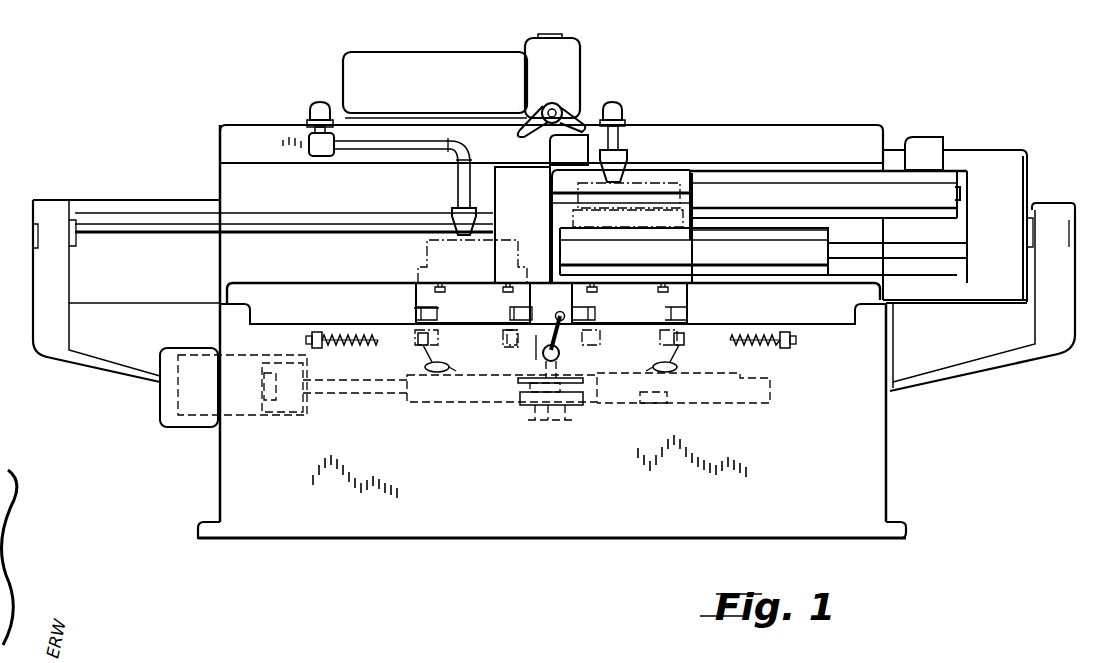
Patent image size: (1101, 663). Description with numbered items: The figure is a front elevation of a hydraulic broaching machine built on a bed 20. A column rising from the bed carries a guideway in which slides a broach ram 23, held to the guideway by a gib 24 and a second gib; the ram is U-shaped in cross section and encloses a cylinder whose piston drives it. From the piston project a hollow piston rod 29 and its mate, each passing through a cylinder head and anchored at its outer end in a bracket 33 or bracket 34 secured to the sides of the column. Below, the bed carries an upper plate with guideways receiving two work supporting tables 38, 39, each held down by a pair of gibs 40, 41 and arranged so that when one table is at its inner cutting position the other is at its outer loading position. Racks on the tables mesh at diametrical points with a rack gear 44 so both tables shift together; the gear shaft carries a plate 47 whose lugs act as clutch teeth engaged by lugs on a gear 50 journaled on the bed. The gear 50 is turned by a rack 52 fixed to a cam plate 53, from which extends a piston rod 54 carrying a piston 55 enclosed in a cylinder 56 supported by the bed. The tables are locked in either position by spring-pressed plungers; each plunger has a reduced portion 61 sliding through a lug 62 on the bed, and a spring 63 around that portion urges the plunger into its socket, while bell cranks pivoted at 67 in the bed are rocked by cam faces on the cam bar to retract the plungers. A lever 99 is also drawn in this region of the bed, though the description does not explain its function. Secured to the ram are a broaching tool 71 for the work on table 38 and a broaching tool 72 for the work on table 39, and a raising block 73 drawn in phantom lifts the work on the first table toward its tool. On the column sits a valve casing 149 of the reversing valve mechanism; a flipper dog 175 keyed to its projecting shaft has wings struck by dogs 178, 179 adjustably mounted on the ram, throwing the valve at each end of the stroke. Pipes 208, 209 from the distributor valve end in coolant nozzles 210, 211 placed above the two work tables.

The bed 20 is at (880, 458).
The broach ram 23 is at (957, 268).
The gib 24 is at (272, 133).
The hollow piston rod 29 is at (153, 217).
The arm or bracket 33 is at (62, 272).
The arm or bracket 34 is at (997, 360).
The work supporting table 38 is at (680, 300).
The work supporting table 39 is at (412, 281).
The gib 40 is at (588, 313).
The gib 41 is at (414, 314).
The rack gear 44 is at (535, 340).
The plate 47 is at (518, 378).
The gear 50 is at (517, 403).
The rack 52 is at (620, 393).
The cam plate 53 is at (440, 392).
The piston rod 54 is at (377, 390).
The piston 55 is at (282, 403).
The cylinder 56 is at (310, 408).
The reduced portion 61 is at (357, 343).
The lug 62 is at (308, 337).
The spring 63 is at (357, 332).
The pivot 67 is at (413, 363).
The broaching tool 71 is at (937, 203).
The broaching tool 72 is at (828, 262).
The raising block 73 is at (683, 265).
The lever 99 is at (561, 314).
The valve casing 149 is at (474, 62).
The flipper dog 175 is at (562, 106).
The dog 178 is at (928, 143).
The dog 179 is at (560, 148).
The pipe 208 is at (396, 148).
The pipe 209 is at (625, 115).
The coolant nozzle 210 is at (455, 215).
The coolant nozzle 211 is at (628, 170).